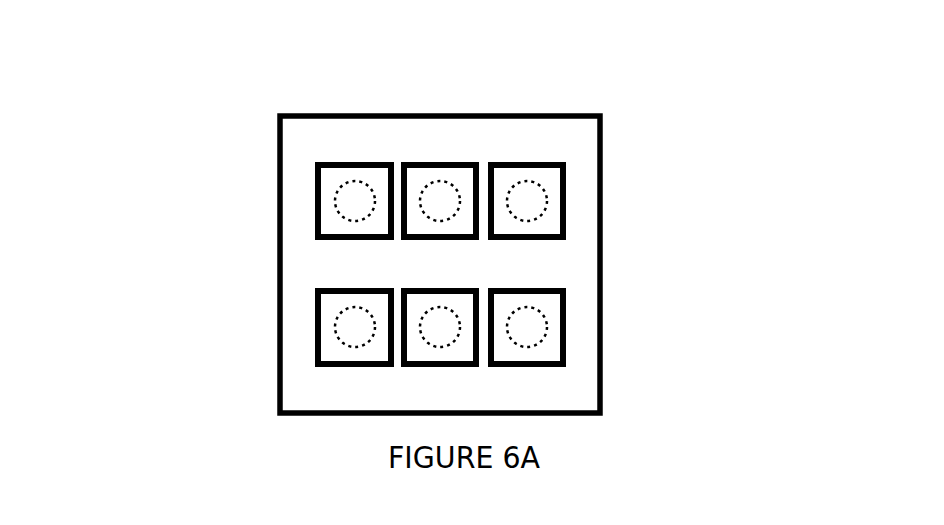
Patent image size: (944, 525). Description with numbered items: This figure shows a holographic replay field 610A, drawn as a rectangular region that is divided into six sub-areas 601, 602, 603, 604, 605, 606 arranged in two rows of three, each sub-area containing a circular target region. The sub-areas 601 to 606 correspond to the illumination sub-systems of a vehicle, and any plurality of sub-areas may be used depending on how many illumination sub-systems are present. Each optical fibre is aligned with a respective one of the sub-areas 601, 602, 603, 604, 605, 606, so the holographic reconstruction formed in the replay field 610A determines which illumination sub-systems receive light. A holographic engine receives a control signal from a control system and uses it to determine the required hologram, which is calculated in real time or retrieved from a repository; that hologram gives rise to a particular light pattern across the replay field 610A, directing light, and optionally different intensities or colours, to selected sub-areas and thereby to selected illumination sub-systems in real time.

The replay field 610A is at (603, 141).
The sub-area 601 is at (316, 194).
The sub-area 602 is at (438, 162).
The sub-area 603 is at (566, 204).
The sub-area 604 is at (316, 321).
The sub-area 605 is at (405, 367).
The sub-area 606 is at (566, 323).